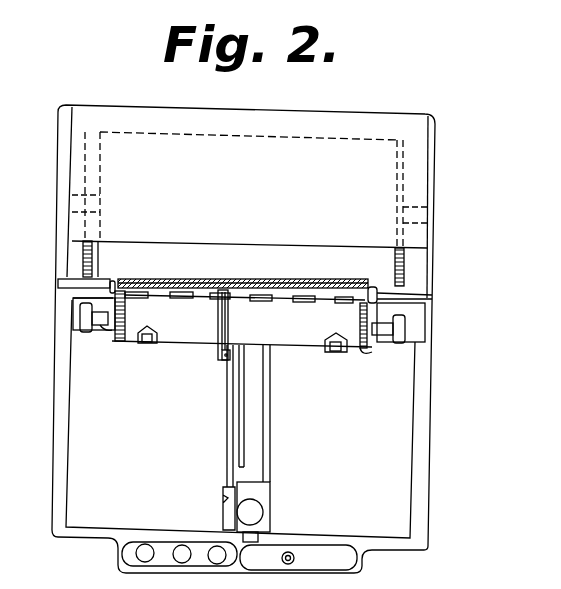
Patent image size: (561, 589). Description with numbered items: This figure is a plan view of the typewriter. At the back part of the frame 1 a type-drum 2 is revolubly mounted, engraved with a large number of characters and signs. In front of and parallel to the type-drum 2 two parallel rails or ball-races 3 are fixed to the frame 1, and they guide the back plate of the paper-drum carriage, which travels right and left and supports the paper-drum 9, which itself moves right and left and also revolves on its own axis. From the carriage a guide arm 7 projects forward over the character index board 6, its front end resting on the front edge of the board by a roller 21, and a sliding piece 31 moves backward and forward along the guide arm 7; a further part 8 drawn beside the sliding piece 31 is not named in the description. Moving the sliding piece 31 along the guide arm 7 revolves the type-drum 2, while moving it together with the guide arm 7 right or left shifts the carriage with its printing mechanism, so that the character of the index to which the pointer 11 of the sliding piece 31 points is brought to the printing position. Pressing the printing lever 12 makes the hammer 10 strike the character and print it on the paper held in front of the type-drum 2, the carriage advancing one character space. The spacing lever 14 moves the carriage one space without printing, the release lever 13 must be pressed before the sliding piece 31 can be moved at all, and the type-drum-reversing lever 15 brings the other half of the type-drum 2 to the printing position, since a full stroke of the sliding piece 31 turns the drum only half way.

The frame 1 is at (438, 169).
The type-drum 2 is at (252, 217).
The rail or ball-race 3 is at (78, 285).
The character index board 6 is at (240, 419).
The guide arm 7 is at (258, 409).
The roller 8 is at (264, 505).
The paper-drum 9 is at (268, 322).
The hammer 10 is at (222, 356).
The pointer 11 is at (229, 486).
The printing lever 12 is at (145, 546).
The release lever 13 is at (182, 547).
The spacing lever 14 is at (215, 548).
The type-drum-reversing lever 15 is at (294, 553).
The roller 21 is at (257, 542).
The sliding piece 31 is at (262, 486).